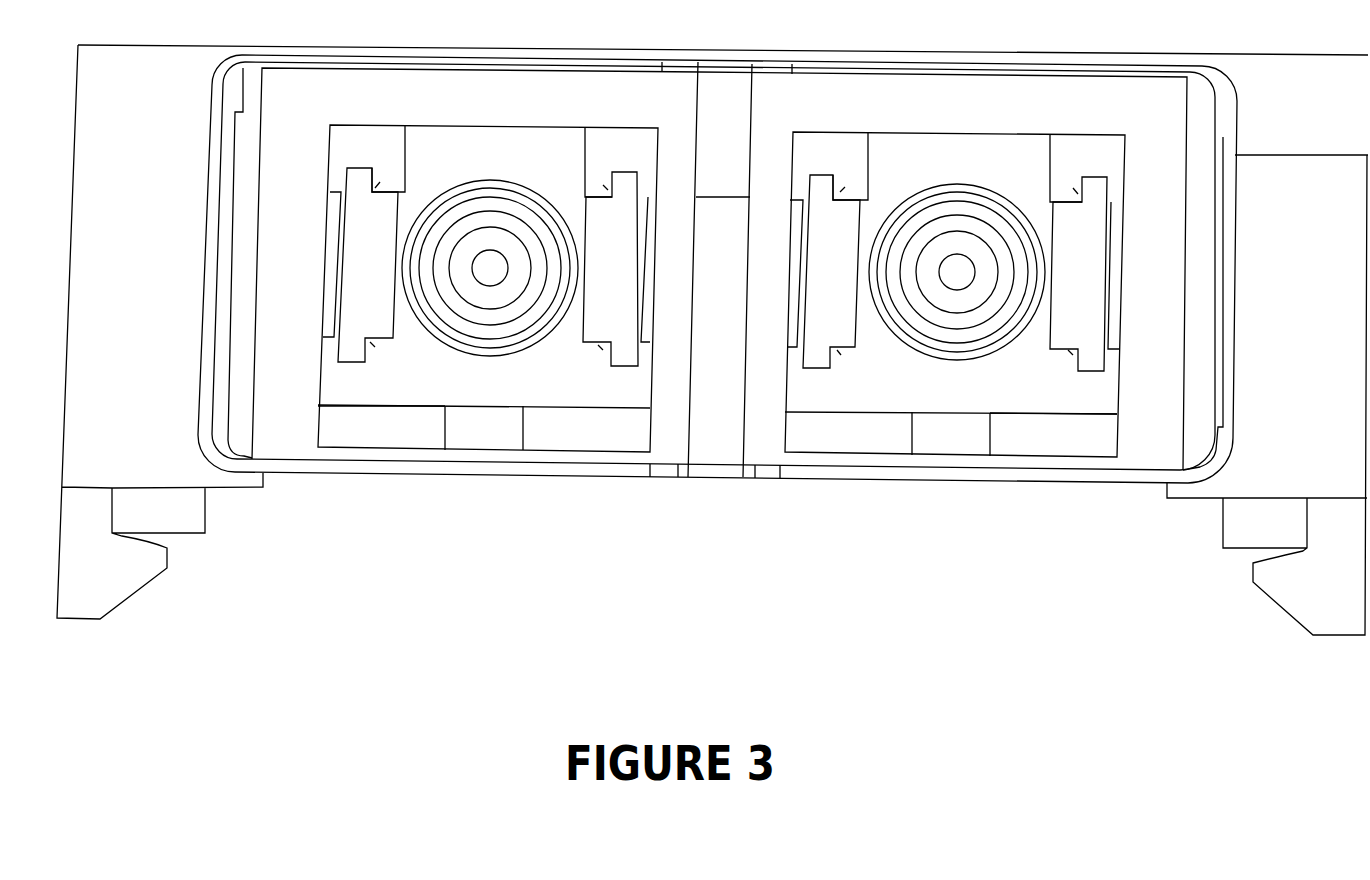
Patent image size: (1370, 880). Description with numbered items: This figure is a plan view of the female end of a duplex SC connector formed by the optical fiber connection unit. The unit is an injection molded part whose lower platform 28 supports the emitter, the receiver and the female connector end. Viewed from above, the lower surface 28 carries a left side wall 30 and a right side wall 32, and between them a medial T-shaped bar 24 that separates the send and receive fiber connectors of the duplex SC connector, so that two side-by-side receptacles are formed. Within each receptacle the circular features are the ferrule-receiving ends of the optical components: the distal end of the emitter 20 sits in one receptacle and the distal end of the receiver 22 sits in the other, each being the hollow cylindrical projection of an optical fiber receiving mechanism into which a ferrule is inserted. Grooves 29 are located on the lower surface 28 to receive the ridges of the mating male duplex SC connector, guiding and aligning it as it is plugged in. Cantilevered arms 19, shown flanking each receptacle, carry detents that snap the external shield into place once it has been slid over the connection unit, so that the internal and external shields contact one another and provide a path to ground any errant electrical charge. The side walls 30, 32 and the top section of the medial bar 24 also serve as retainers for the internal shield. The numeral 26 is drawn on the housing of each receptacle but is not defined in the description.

The cantilevered arms 19 is at (377, 318).
The distal end of the emitter 20 is at (950, 303).
The distal end of the receiver 22 is at (483, 303).
The medial T-shaped bar 24 is at (723, 117).
The housing 26 is at (496, 116).
The lower platform 28 is at (335, 437).
The grooves 29 is at (500, 444).
The left side wall 30 is at (302, 284).
The right side wall 32 is at (1172, 294).